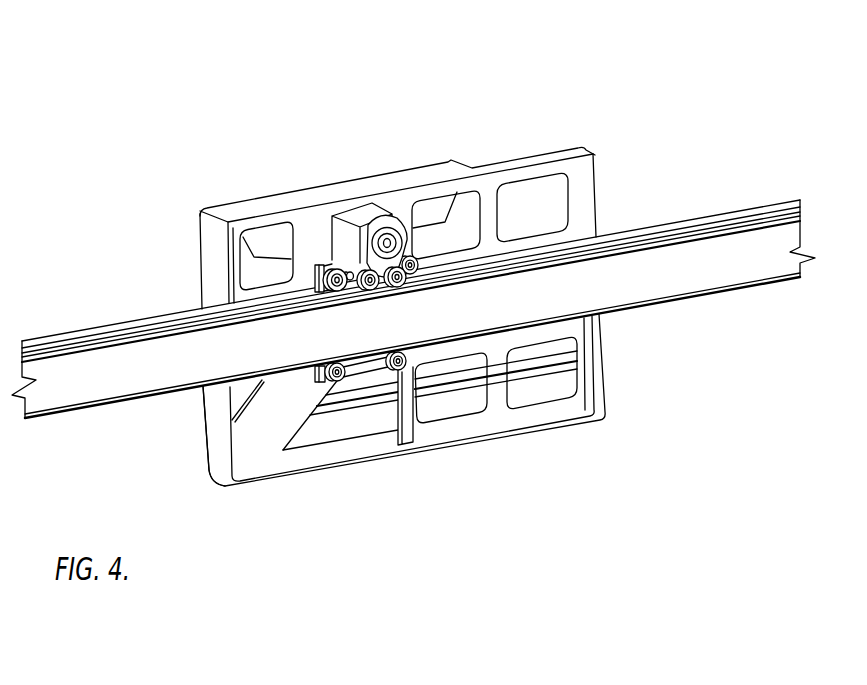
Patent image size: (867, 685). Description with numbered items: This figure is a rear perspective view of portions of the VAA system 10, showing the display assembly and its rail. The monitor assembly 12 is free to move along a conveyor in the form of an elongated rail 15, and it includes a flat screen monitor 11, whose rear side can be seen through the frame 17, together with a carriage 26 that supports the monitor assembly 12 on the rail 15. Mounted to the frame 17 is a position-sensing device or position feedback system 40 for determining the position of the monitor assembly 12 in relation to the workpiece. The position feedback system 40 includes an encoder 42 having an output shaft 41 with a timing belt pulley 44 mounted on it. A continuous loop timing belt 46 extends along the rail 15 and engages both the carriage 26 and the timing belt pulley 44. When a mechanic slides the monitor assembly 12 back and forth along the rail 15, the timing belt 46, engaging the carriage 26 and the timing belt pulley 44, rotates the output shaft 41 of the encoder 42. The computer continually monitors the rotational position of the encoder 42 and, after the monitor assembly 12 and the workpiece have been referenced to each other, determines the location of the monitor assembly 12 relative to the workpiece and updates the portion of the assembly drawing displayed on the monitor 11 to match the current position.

The VAA system 10 is at (662, 85).
The flat screen monitor 11 is at (208, 267).
The monitor assembly 12 is at (533, 153).
The elongated rail 15 is at (200, 392).
The frame 17 is at (405, 413).
The carriage 26 is at (313, 277).
The position feedback system 40 is at (505, 244).
The output shaft 41 is at (376, 227).
The encoder 42 is at (337, 222).
The timing belt pulley 44 is at (393, 225).
The continuous loop timing belt 46 is at (648, 235).